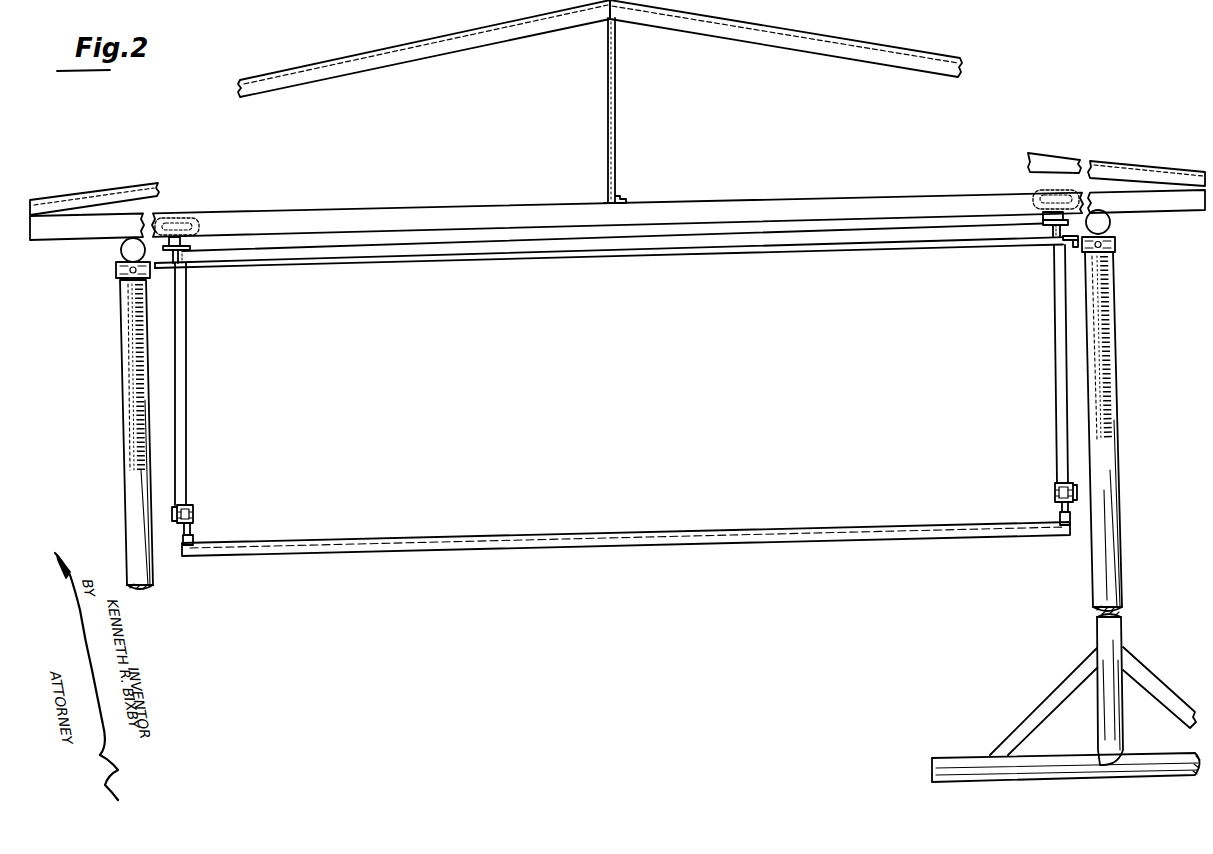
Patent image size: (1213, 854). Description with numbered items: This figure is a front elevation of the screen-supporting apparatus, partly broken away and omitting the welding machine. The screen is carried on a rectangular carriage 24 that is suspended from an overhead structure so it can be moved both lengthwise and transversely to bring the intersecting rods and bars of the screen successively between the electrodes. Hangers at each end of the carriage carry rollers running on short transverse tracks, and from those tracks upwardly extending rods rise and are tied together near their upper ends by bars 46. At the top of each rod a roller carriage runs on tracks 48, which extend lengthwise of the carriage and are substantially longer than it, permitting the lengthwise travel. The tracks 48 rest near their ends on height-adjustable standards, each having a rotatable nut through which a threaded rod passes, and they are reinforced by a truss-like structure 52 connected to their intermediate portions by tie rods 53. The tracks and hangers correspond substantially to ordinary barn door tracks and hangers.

The carriage 24 is at (705, 550).
The bars 46 is at (623, 250).
The tracks 48 is at (385, 215).
The truss-like structure 52 is at (766, 38).
The tie rods 53 is at (620, 120).